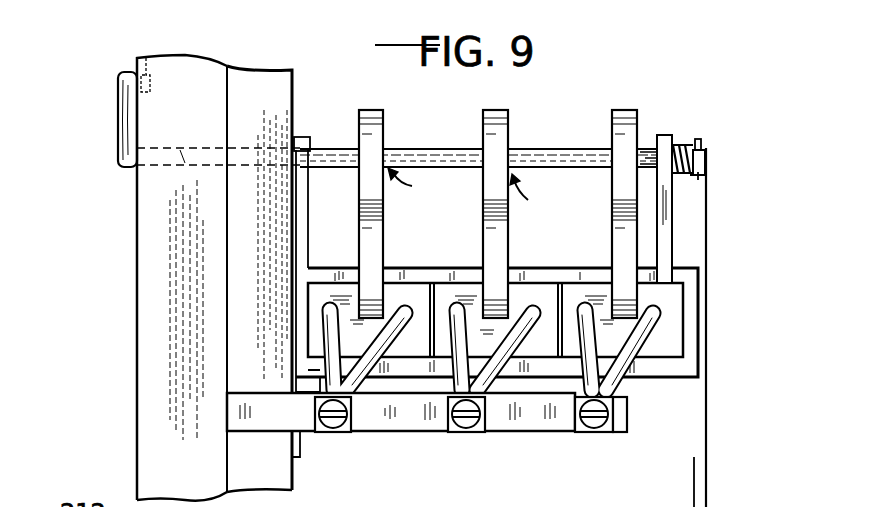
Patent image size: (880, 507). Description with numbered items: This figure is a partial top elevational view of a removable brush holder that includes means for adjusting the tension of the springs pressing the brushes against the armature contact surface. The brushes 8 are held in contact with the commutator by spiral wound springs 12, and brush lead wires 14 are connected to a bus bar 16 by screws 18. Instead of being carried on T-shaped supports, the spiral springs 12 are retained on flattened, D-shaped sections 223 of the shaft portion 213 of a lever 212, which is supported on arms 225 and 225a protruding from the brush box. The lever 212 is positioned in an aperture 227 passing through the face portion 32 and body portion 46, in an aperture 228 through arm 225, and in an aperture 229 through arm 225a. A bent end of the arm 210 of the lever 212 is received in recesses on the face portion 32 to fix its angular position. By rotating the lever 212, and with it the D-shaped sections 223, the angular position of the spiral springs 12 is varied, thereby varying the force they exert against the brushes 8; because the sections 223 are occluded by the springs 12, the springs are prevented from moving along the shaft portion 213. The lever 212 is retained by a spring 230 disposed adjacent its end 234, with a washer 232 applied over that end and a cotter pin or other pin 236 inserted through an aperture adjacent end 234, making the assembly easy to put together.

The brushes 8 is at (444, 290).
The spiral wound springs 12 is at (483, 118).
The brush lead wires 14 is at (595, 388).
The bus bar 16 is at (533, 432).
The screws 18 is at (345, 433).
The face portion 32 is at (204, 68).
The body portion 46 is at (258, 76).
The arm 210 is at (148, 70).
The lever 212 is at (117, 112).
The shaft portion 213 is at (185, 158).
The D-shaped sections 223 is at (482, 194).
The arm 225 is at (302, 148).
The arm 225a is at (663, 140).
The aperture 227 is at (167, 160).
The aperture 228 is at (312, 140).
The aperture 229 is at (672, 142).
The spring 230 is at (678, 172).
The washer 232 is at (700, 174).
The end 234 is at (708, 160).
The pin 236 is at (702, 146).